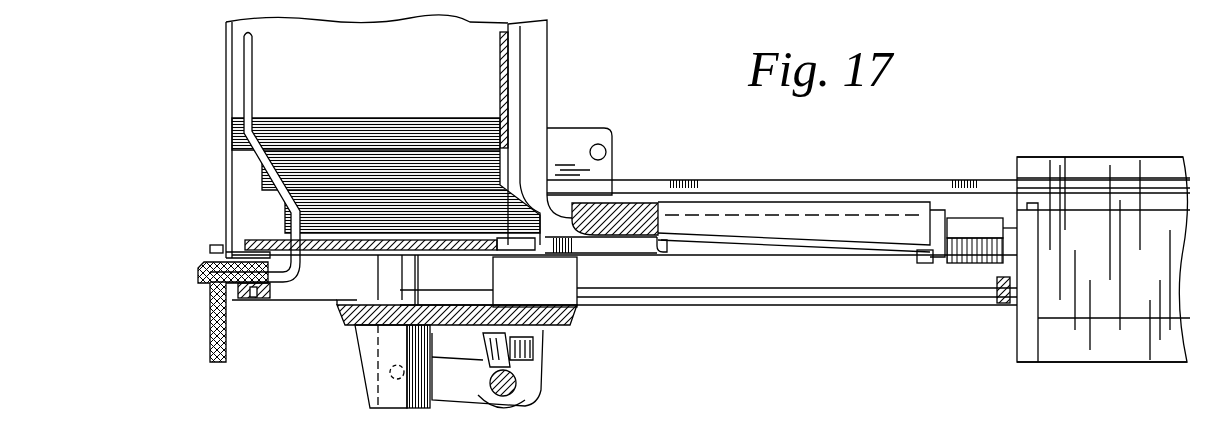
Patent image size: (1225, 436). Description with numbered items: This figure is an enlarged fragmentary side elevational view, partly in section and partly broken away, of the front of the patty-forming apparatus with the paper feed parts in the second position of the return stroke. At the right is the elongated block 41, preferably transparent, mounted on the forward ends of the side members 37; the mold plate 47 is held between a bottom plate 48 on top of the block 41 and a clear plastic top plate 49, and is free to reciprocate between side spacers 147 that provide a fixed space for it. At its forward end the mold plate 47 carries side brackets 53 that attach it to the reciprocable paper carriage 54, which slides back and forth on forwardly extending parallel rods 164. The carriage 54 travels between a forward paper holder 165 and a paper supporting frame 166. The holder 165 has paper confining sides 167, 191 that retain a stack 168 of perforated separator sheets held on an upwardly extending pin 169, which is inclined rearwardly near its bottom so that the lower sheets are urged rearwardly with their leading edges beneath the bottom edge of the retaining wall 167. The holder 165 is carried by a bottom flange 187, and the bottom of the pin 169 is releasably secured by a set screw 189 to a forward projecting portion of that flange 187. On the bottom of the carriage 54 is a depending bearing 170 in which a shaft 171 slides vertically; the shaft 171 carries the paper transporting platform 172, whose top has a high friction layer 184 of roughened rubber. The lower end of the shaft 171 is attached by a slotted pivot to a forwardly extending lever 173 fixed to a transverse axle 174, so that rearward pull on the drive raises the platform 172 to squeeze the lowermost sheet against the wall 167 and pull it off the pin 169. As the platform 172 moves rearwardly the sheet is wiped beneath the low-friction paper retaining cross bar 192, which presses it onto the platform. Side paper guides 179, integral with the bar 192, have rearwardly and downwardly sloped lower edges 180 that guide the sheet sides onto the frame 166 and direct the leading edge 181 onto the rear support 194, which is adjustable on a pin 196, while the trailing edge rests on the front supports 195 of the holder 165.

The paper confining side 191 is at (400, 56).
The paper holder 165 is at (232, 148).
The retaining wall 167 is at (500, 60).
The stack of separator paper 168 is at (372, 119).
The pin 169 is at (268, 162).
The side bracket 53 is at (612, 151).
The mold plate 47 is at (892, 183).
The paper retaining cross bar 192 is at (645, 213).
The side paper guide 179 is at (748, 223).
The paper supporting frame 166 is at (718, 248).
The sloped lower edge 180 is at (730, 242).
The front support 195 is at (655, 257).
The parallel rod 164 is at (672, 293).
The high friction layer 184 is at (527, 242).
The paper transporting platform 172 is at (433, 247).
The shaft 171 is at (392, 272).
The bottom flange 187 is at (200, 297).
The set screw 189 is at (253, 296).
The paper carriage 54 is at (355, 328).
The depending bearing 170 is at (372, 375).
The lever 173 is at (450, 387).
The transverse axle 174 is at (500, 403).
The pin 196 is at (1012, 227).
The rear support 194 is at (923, 262).
The block 41 is at (1122, 276).
The top plate 49 is at (1080, 165).
The side spacer 147 is at (1113, 180).
The bottom plate 48 is at (1165, 203).
The side member 37 is at (1137, 350).
The leading edge 181 is at (415, 432).